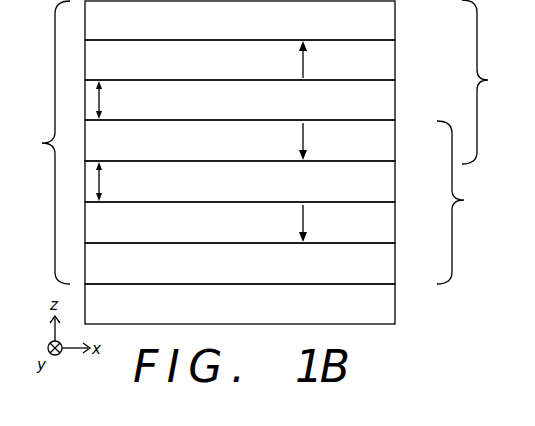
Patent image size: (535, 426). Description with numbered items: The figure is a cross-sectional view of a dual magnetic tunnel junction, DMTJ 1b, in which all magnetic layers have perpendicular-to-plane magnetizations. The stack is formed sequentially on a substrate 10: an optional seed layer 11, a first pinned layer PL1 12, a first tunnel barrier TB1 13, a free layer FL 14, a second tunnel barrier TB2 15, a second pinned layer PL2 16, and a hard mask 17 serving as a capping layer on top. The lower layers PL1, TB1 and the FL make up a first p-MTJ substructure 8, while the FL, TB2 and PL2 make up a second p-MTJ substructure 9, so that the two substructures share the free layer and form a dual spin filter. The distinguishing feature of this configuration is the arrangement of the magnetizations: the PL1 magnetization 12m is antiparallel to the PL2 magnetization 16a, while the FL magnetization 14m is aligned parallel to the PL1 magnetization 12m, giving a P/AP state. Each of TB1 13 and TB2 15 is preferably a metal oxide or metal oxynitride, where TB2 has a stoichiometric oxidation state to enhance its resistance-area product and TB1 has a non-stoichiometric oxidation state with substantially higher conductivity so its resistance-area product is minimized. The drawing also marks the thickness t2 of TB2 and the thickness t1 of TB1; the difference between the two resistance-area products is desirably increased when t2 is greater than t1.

The DMTJ 1b is at (42, 142).
The first p-MTJ substructure 8 is at (459, 202).
The second p-MTJ substructure 9 is at (483, 82).
The substrate 10 is at (382, 307).
The seed layer 11 is at (382, 263).
The PL1 12 is at (382, 225).
The PL1 magnetization 12m is at (322, 223).
The TB1 13 is at (382, 183).
The FL 14 is at (382, 144).
The FL magnetization 14m is at (322, 141).
The TB2 15 is at (382, 101).
The PL2 16 is at (382, 61).
The PL2 magnetization 16a is at (319, 59).
The hard mask 17 is at (382, 22).
The thickness of TB1 t1 is at (109, 181).
The thickness of TB2 t2 is at (109, 100).